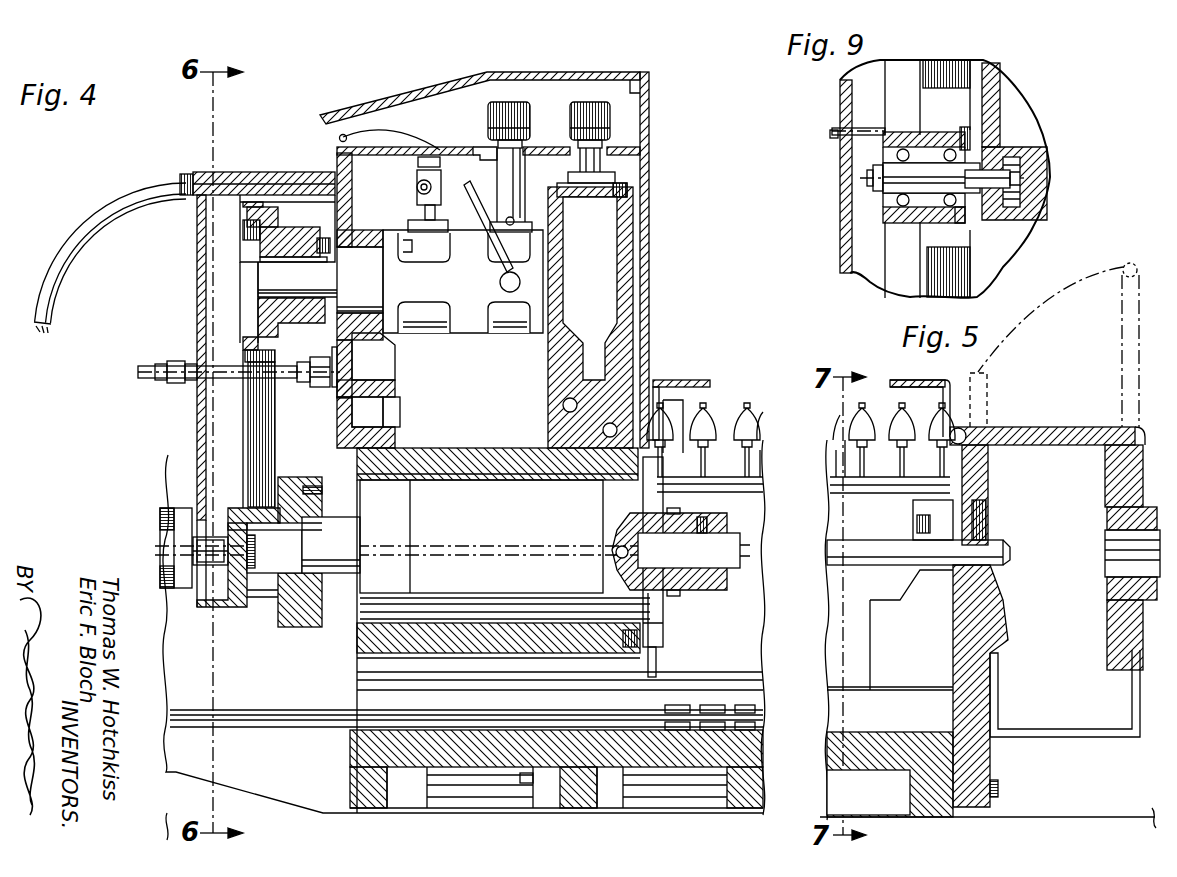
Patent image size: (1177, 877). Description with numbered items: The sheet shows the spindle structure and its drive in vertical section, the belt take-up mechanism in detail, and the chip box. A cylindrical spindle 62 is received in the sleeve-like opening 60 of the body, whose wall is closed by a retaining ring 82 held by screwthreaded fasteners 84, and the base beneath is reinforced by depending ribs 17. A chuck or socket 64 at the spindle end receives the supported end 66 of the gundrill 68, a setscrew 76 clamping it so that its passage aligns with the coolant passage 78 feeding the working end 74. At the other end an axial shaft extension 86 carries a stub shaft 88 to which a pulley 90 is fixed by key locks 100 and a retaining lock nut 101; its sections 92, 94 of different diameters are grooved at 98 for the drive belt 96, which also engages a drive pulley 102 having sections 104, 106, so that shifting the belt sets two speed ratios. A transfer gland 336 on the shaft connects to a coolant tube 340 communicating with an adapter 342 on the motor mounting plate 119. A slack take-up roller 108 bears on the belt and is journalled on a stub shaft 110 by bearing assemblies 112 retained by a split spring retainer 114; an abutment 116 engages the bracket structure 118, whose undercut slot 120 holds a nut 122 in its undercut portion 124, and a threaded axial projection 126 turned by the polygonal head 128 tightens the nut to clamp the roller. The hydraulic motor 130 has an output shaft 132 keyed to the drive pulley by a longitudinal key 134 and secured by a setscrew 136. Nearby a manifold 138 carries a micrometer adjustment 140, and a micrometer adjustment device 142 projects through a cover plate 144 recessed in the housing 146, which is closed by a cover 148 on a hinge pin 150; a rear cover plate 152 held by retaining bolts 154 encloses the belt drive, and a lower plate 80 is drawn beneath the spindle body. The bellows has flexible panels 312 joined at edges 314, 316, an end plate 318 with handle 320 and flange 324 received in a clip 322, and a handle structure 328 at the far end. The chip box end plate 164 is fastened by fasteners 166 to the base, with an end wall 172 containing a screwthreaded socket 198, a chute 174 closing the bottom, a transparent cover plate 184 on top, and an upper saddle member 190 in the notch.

In FIG. 4, the depending ribs 17 is at (560, 793).
In FIG. 4, the cylindrical sleeve-like opening 60 is at (482, 488).
In FIG. 4, the spindle 62 is at (503, 646).
In FIG. 4, the chuck or socket 64 is at (705, 580).
In FIG. 4, the supported end of gundrill 66 is at (732, 553).
In FIG. 5, the gundrill 68 is at (876, 560).
In FIG. 5, the working end of gundrill 74 is at (1005, 555).
In FIG. 4, the setscrew 76 is at (704, 525).
In FIG. 4, the coolant passage 78 is at (615, 553).
In FIG. 4, the lower plate 80 is at (425, 625).
In FIG. 4, the retaining ring 82 is at (658, 637).
In FIG. 4, the screwthreaded fasteners 84 is at (628, 642).
In FIG. 4, the axial shaft extension 86 is at (340, 585).
In FIG. 4, the stub shaft 88 is at (255, 570).
In FIG. 4, the pulley 90 is at (288, 598).
In FIG. 4, the pulley section 92 is at (293, 477).
In FIG. 4, the pulley section 94 is at (256, 512).
In FIG. 4, the drive belt 96 is at (268, 432).
In FIG. 4, the grooves 98 is at (311, 492).
In FIG. 4, the key locks 100 is at (228, 533).
In FIG. 4, the retaining lock nut 101 is at (248, 573).
In FIG. 4, the drive pulley 102 is at (278, 212).
In FIG. 4, the pulley section 104 is at (295, 240).
In FIG. 4, the pulley section 106 is at (256, 200).
In FIG. 9, the slack take-up roller 108 is at (900, 212).
In FIG. 9, the stub shaft 110 is at (908, 185).
In FIG. 9, the bearing assemblies 112 is at (960, 208).
In FIG. 9, the retainer 114 is at (884, 181).
In FIG. 9, the abutment 116 is at (975, 167).
In FIG. 4, the bracket structure 118 is at (383, 443).
In FIG. 9, the bracket structure 118 is at (1030, 218).
In FIG. 4, the motor mounting plate 119 is at (338, 330).
In FIG. 4, the undercut slot 120 is at (372, 400).
In FIG. 9, the nut 122 is at (1020, 190).
In FIG. 4, the undercut portion 124 is at (375, 413).
In FIG. 9, the threaded axial projection 126 is at (1003, 180).
In FIG. 9, the polygonal head 128 is at (876, 176).
In FIG. 4, the hydraulic motor 130 is at (502, 340).
In FIG. 4, the output shaft 132 is at (320, 292).
In FIG. 4, the longitudinal key 134 is at (256, 286).
In FIG. 4, the setscrew 136 is at (350, 218).
In FIG. 4, the manifold 138 is at (626, 330).
In FIG. 4, the micrometer adjustment 140 is at (607, 118).
In FIG. 4, the micrometer adjustment device 142 is at (521, 103).
In FIG. 4, the cover plate 144 is at (618, 152).
In FIG. 4, the housing 146 is at (649, 262).
In FIG. 4, the cover 148 is at (608, 73).
In FIG. 4, the hinge pin 150 is at (346, 134).
In FIG. 4, the rear cover plate 152 is at (197, 258).
In FIG. 4, the retaining bolts 154 is at (196, 178).
In FIG. 5, the end plate 164 is at (985, 735).
In FIG. 5, the fasteners 166 is at (997, 792).
In FIG. 5, the end wall 172 is at (1125, 630).
In FIG. 5, the chute 174 is at (1145, 730).
In FIG. 5, the transparent cover plate 184 is at (1030, 433).
In FIG. 5, the upper saddle member 190 is at (983, 460).
In FIG. 5, the screwthreaded socket 198 is at (1118, 542).
In FIG. 4, the flexible panels 312 is at (768, 445).
In FIG. 4, the secured edge 314 is at (752, 430).
In FIG. 4, the secured edge 316 is at (741, 417).
In FIG. 4, the end plate 318 is at (660, 392).
In FIG. 4, the handle 320 is at (702, 383).
In FIG. 4, the clip 322 is at (661, 472).
In FIG. 4, the flange 324 is at (679, 420).
In FIG. 5, the handle structure 328 is at (914, 383).
In FIG. 4, the transfer gland 336 is at (175, 538).
In FIG. 4, the tube 340 is at (222, 370).
In FIG. 4, the adapter 342 is at (398, 352).